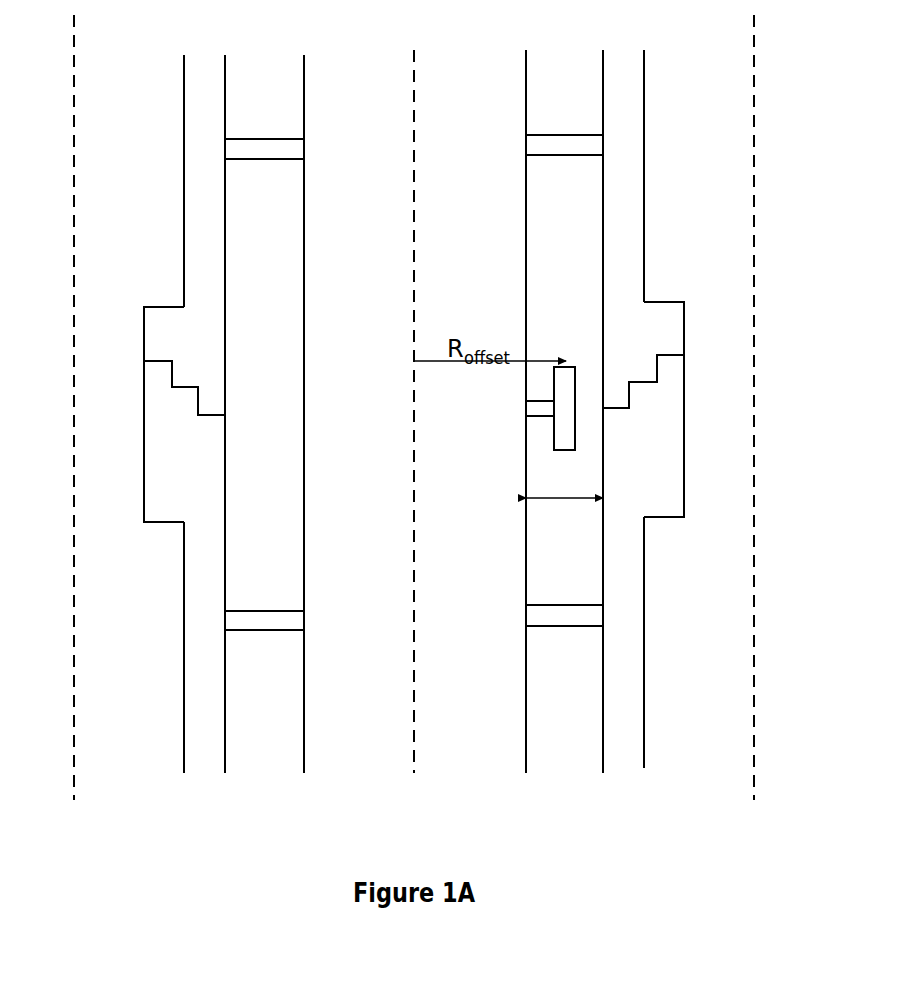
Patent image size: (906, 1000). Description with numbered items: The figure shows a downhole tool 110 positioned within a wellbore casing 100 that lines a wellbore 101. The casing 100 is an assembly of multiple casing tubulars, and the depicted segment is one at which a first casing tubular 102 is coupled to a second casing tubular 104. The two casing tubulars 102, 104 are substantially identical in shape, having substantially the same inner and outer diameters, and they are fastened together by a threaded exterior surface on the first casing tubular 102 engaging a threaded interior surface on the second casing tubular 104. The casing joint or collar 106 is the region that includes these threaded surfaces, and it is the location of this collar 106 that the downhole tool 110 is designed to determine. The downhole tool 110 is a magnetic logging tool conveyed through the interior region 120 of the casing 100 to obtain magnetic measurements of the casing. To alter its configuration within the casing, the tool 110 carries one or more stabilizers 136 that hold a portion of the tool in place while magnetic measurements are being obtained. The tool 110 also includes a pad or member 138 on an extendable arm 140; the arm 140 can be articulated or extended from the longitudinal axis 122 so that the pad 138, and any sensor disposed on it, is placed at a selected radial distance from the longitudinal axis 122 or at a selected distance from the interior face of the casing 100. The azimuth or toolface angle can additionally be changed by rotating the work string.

The wellbore casing 100 is at (178, 70).
The wellbore 101 is at (755, 228).
The first casing tubular 102 is at (645, 120).
The second casing tubular 104 is at (622, 676).
The casing joint or collar 106 is at (663, 333).
The downhole tool 110 is at (303, 98).
The interior region 120 is at (558, 95).
The longitudinal axis 122 is at (414, 685).
The stabilizers 136 is at (283, 161).
The pad or member 138 is at (576, 408).
The extendable arm 140 is at (540, 417).